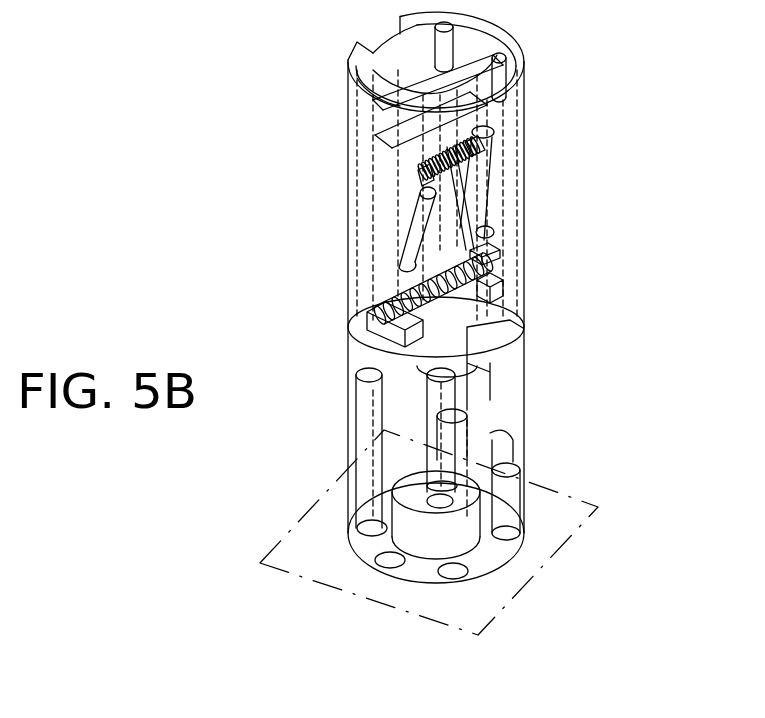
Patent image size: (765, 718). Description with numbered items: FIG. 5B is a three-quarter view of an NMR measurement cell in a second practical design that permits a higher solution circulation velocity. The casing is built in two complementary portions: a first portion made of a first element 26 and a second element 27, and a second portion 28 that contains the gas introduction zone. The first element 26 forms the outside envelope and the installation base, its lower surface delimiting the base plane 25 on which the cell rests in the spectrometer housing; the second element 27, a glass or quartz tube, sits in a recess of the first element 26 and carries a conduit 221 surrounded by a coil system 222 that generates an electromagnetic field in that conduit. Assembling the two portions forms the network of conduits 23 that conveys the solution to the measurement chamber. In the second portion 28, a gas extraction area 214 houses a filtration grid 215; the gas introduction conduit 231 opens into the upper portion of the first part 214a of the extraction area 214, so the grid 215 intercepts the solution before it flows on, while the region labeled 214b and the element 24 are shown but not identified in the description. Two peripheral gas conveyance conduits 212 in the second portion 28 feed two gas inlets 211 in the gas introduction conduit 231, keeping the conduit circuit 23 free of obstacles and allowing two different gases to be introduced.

The second portion 28 is at (510, 122).
The base 24 is at (357, 542).
The base plane 25 is at (275, 555).
The first element 26 is at (372, 358).
The second element 27 is at (252, 268).
The conduit 221 is at (402, 293).
The coil system 222 is at (478, 281).
The network of conduits 23 is at (410, 246).
The gas extraction area 214 is at (462, 128).
The first part of the extraction area 214a is at (425, 178).
The second end of rail 214b is at (440, 143).
The filtration grid 215 is at (432, 155).
The gas introduction conduit 231 is at (480, 183).
The gas conveyance conduits 212 is at (463, 198).
The gas inlets 211 is at (487, 251).